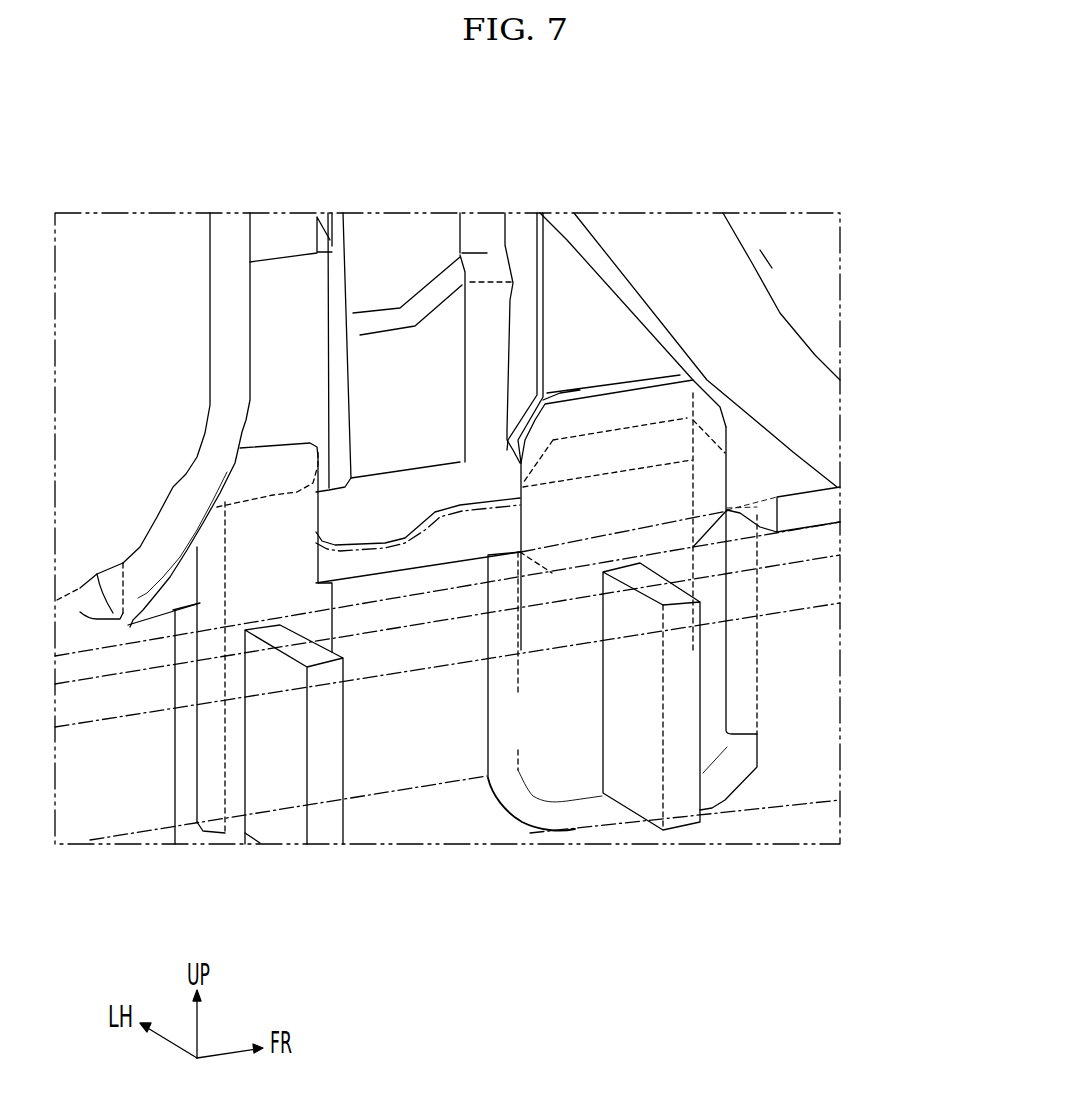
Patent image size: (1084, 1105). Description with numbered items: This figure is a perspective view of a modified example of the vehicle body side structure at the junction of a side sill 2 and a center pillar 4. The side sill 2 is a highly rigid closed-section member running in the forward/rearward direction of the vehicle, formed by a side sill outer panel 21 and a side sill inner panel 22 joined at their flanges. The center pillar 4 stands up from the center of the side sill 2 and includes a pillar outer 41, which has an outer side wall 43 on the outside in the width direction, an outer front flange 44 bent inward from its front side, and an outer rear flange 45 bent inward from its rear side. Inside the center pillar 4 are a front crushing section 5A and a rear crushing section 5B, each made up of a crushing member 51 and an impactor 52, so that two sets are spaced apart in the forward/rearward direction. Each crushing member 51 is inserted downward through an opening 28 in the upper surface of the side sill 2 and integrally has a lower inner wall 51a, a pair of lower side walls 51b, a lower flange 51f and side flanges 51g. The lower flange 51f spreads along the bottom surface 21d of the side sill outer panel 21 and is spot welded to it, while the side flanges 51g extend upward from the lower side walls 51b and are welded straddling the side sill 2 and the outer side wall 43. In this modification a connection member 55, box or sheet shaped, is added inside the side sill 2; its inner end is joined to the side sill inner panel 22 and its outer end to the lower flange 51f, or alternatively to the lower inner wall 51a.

The side sill 2 is at (824, 536).
The center pillar 4 is at (756, 259).
The front crushing section 5A is at (718, 409).
The rear crushing section 5B is at (237, 473).
The side sill outer panel 21 is at (763, 513).
The bottom surface 21d is at (800, 783).
The side sill inner panel 22 is at (815, 580).
The opening 28 is at (808, 598).
The pillar outer 41 is at (708, 225).
The outer side wall 43 is at (401, 240).
The outer front flange 44 is at (767, 323).
The outer rear flange 45 is at (215, 300).
The crushing member 51 is at (670, 497).
The lower inner wall 51a is at (233, 823).
The lower side walls 51b is at (537, 715).
The lower flange 51f is at (243, 843).
The side flanges 51g is at (187, 792).
The impactor 52 is at (558, 270).
The connection member 55 is at (337, 813).